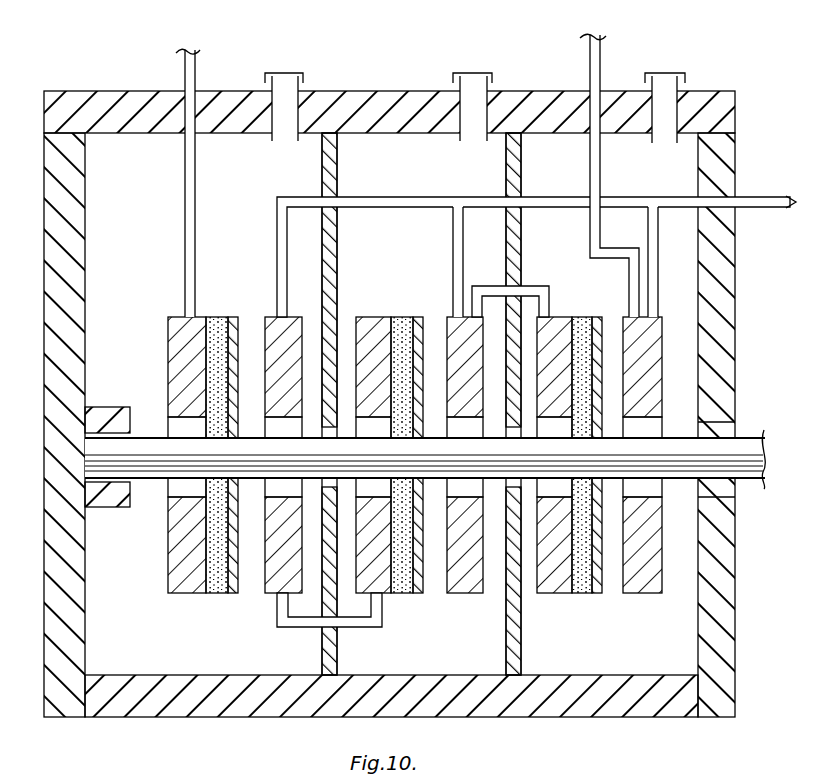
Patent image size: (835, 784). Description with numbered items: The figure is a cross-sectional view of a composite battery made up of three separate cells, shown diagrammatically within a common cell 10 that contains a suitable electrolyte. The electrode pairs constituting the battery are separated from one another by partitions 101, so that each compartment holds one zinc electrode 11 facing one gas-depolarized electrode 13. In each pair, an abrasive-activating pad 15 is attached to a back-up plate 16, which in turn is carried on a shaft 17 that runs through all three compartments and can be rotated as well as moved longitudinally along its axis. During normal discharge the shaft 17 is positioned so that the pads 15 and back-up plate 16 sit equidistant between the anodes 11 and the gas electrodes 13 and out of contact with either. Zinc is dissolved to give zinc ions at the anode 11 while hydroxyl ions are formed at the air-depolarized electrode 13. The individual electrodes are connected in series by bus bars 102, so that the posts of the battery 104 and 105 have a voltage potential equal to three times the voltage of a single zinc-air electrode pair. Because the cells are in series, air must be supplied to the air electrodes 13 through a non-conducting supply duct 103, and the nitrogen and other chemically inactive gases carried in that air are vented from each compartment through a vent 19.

The cell 10 is at (48, 560).
The zinc electrode 11 is at (173, 582).
The gas-depolarized electrode 13 is at (267, 593).
The abrasive-activating pad 15 is at (218, 317).
The back-up plate 16 is at (238, 315).
The shaft 17 is at (152, 467).
The vent 19 is at (288, 73).
The partition 101 is at (337, 163).
The bus bar 102 is at (542, 285).
The non-conducting supply duct 103 is at (277, 220).
The battery post 104 is at (195, 180).
The battery post 105 is at (602, 163).